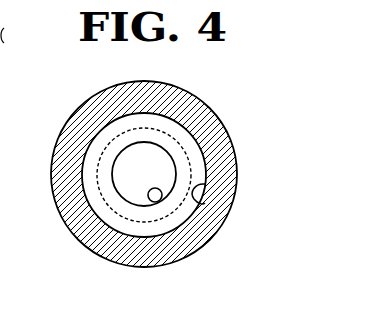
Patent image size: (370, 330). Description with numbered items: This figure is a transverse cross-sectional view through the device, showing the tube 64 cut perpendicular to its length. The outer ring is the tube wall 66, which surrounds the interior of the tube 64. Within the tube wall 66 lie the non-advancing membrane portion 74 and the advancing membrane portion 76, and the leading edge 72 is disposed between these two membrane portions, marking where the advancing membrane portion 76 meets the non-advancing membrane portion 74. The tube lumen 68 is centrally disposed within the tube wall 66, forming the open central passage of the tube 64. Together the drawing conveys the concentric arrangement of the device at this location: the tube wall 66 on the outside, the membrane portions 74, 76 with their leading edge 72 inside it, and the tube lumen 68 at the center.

The tube 64 is at (145, 268).
The tube wall 66 is at (207, 110).
The tube lumen 68 is at (140, 160).
The leading edge 72 is at (191, 168).
The non-advancing membrane portion 74 is at (205, 184).
The advancing membrane portion 76 is at (196, 201).